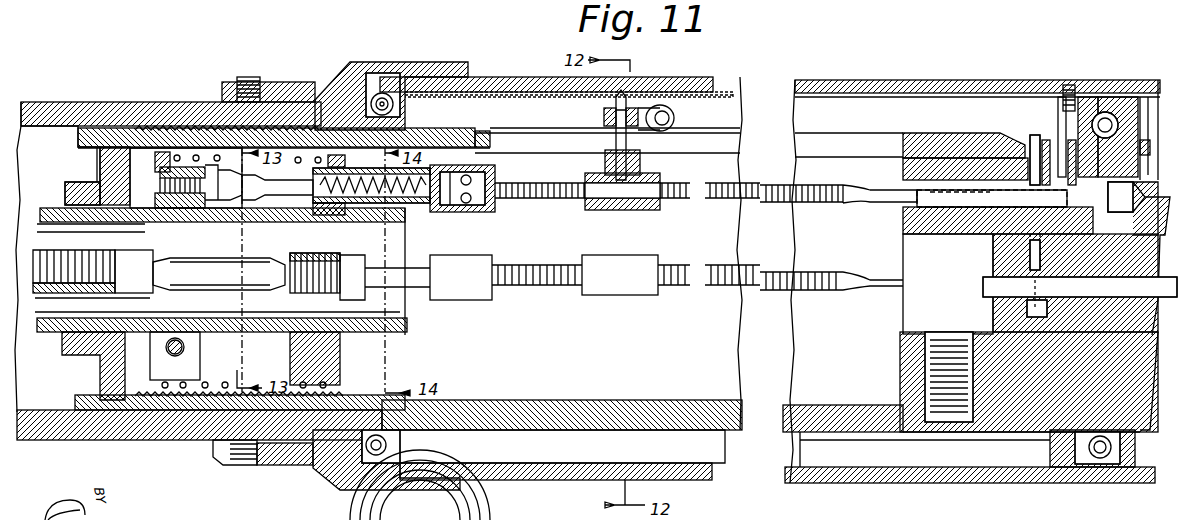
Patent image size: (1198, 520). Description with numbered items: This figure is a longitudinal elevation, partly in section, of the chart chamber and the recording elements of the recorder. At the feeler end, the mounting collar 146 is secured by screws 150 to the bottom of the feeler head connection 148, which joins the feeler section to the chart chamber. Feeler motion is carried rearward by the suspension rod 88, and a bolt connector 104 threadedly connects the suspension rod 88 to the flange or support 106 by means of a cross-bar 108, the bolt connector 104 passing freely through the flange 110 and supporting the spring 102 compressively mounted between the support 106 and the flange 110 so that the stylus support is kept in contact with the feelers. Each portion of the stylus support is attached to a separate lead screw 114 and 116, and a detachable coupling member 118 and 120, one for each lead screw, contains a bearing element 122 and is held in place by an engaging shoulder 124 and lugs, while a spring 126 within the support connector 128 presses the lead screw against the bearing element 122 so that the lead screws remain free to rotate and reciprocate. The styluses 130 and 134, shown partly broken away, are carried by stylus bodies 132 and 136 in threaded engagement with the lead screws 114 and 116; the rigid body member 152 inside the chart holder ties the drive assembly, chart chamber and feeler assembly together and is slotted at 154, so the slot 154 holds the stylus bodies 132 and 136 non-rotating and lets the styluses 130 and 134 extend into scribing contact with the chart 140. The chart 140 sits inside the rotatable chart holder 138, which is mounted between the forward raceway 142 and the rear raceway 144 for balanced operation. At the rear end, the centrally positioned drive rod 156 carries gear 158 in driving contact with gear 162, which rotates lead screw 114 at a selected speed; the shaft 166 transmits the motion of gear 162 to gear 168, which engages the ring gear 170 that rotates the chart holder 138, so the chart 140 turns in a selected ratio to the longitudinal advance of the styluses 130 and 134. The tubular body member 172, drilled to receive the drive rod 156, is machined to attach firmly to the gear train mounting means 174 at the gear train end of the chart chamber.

The suspension rod 88 is at (52, 290).
The spring 102 is at (195, 432).
The bolt connector 104 is at (190, 262).
The support 106 is at (380, 350).
The cross-bar 108 is at (316, 262).
The flange 110 is at (190, 360).
The lead screw 114 is at (860, 195).
The lead screw 116 is at (820, 290).
The detachable coupling member 118 is at (478, 214).
The detachable coupling member 120 is at (477, 300).
The bearing element 122 is at (492, 172).
The shoulder 124 is at (440, 212).
The spring 126 is at (408, 200).
The support connector 128 is at (445, 170).
The stylus 130 is at (617, 116).
The stylus body 132 is at (645, 210).
The stylus 134 is at (572, 231).
The stylus body 136 is at (615, 290).
The rotatable chart holder 138 is at (672, 472).
The chart 140 is at (870, 470).
The forward raceway 142 is at (330, 473).
The rear raceway 144 is at (1110, 466).
The mounting collar 146 is at (343, 100).
The feeler head connection 148 is at (158, 110).
The screws 150 is at (243, 82).
The rigid body member 152 is at (590, 420).
The slot 154 is at (710, 140).
The drive rod 156 is at (1005, 284).
The gear 158 is at (1032, 310).
The gear 162 is at (1033, 142).
The shaft 166 is at (952, 232).
The gear 168 is at (1092, 117).
The ring gear 170 is at (1062, 104).
The body member 172 is at (1163, 318).
The gear train mounting means 174 is at (1040, 405).